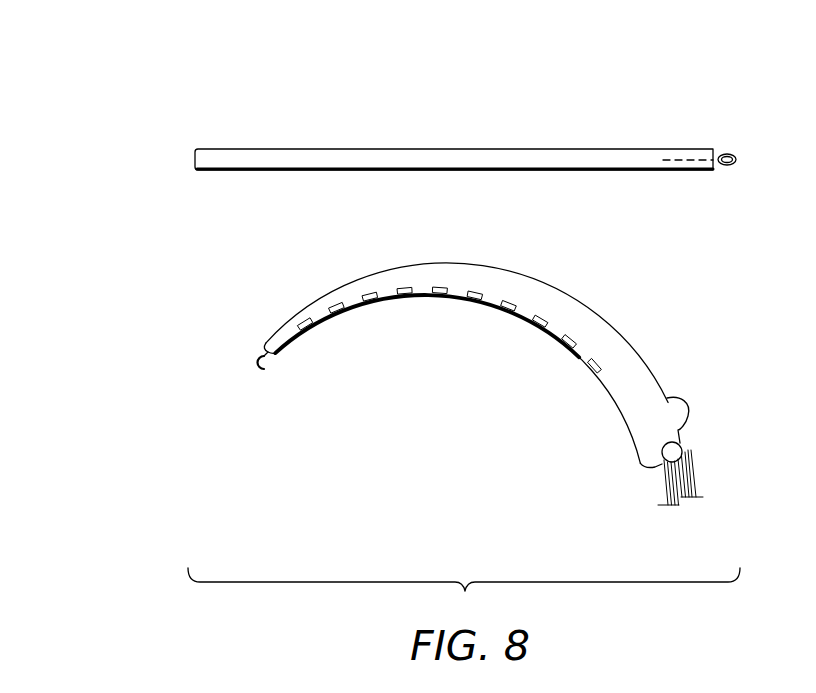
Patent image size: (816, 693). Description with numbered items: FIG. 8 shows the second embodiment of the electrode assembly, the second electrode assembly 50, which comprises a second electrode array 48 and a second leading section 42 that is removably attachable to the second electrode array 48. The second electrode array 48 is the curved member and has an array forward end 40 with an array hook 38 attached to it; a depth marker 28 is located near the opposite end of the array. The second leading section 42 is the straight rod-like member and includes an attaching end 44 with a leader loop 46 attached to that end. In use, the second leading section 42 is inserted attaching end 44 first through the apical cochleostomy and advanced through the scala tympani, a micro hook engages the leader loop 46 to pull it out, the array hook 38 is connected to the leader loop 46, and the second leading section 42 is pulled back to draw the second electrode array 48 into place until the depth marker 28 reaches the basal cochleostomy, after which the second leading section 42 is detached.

The depth marker 28 is at (688, 407).
The array hook 38 is at (246, 378).
The array forward end 40 is at (270, 343).
The second leading section 42 is at (392, 149).
The attaching end 44 is at (683, 152).
The leader loop 46 is at (742, 182).
The second electrode array 48 is at (528, 292).
The second electrode assembly 50 is at (138, 334).